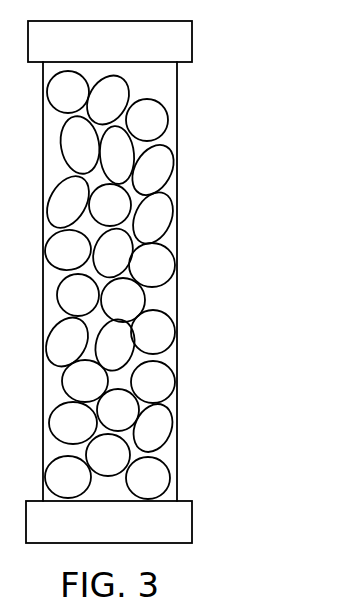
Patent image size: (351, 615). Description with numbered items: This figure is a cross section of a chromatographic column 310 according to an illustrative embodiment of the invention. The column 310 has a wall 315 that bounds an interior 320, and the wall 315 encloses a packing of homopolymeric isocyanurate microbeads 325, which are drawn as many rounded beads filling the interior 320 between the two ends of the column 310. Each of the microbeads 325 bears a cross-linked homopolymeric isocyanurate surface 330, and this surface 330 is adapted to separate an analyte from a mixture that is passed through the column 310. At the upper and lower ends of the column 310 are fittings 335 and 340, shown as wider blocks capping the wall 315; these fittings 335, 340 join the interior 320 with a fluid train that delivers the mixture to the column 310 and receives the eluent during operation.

The chromatographic column 310 is at (258, 222).
The wall 315 is at (179, 120).
The interior 320 is at (167, 456).
The homopolymeric isocyanurate microbeads 325 is at (163, 260).
The cross-linked homopolymeric isocyanurate surface 330 is at (172, 367).
The fitting 335 is at (187, 43).
The fitting 340 is at (183, 527).